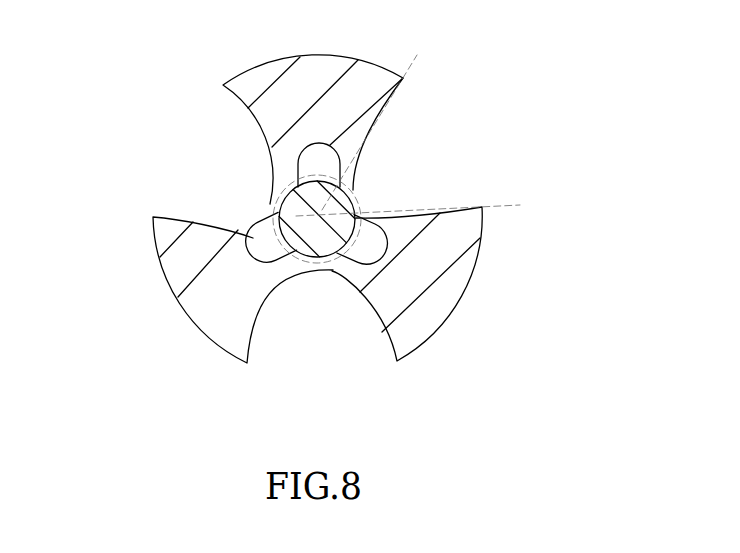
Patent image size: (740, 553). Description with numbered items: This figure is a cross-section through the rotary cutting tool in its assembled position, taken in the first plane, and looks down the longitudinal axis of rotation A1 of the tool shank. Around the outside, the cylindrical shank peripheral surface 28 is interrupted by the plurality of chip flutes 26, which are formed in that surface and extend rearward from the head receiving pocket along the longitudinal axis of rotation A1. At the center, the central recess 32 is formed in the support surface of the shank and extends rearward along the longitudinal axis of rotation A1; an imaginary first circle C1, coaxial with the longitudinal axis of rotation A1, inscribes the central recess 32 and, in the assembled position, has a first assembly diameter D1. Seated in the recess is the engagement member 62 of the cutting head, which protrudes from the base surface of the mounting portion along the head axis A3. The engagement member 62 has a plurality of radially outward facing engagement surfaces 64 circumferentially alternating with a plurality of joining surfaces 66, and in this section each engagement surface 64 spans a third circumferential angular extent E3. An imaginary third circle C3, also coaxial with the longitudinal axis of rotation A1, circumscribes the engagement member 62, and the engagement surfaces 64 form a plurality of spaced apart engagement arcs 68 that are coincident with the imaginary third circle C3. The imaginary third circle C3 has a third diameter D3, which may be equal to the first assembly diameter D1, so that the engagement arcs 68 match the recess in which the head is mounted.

The chip flutes 26 is at (236, 127).
The cylindrical shank peripheral surface 28 is at (306, 228).
The central recess 32 is at (368, 236).
The engagement member 62 is at (262, 220).
The engagement surfaces 64 is at (296, 182).
The joining surfaces 66 is at (330, 142).
The engagement arcs 68 is at (280, 211).
The longitudinal axis of rotation A1 is at (293, 216).
The head axis A3 is at (122, 228).
The imaginary first circle C1 is at (348, 230).
The imaginary third circle C3 is at (122, 302).
The first assembly diameter D1 is at (301, 217).
The third diameter D3 is at (208, 165).
The third circumferential angular extent E3 is at (420, 63).